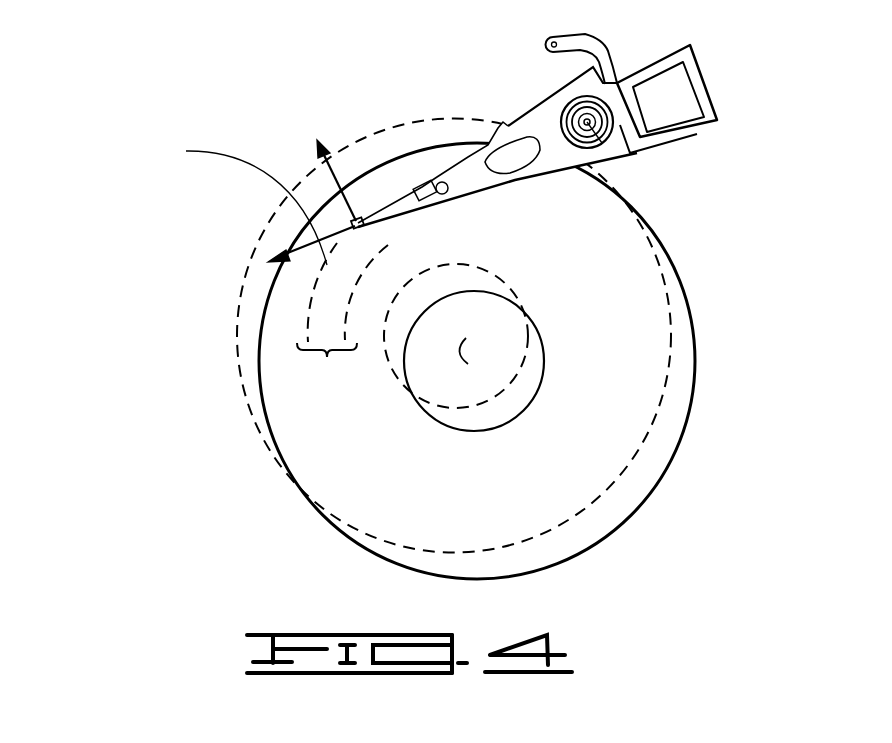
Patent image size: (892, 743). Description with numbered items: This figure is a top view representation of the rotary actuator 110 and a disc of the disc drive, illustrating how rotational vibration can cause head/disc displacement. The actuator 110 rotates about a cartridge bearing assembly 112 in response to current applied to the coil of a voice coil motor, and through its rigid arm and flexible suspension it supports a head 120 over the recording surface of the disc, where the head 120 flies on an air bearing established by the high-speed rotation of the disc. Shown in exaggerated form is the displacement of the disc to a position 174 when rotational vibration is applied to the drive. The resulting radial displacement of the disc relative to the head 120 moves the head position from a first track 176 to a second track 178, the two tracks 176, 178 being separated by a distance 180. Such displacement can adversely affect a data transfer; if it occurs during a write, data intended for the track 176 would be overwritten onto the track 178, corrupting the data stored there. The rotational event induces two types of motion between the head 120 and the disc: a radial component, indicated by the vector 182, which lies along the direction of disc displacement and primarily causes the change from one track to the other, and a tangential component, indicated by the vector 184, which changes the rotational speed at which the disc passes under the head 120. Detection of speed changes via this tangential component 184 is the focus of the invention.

The rotary actuator 110 is at (662, 163).
The cartridge bearing assembly 112 is at (605, 161).
The head 120 is at (352, 218).
The position 174 is at (277, 210).
The first track 176 is at (352, 289).
The second track 178 is at (308, 305).
The distance 180 is at (327, 357).
The vector 182 is at (310, 177).
The vector 184 is at (234, 202).